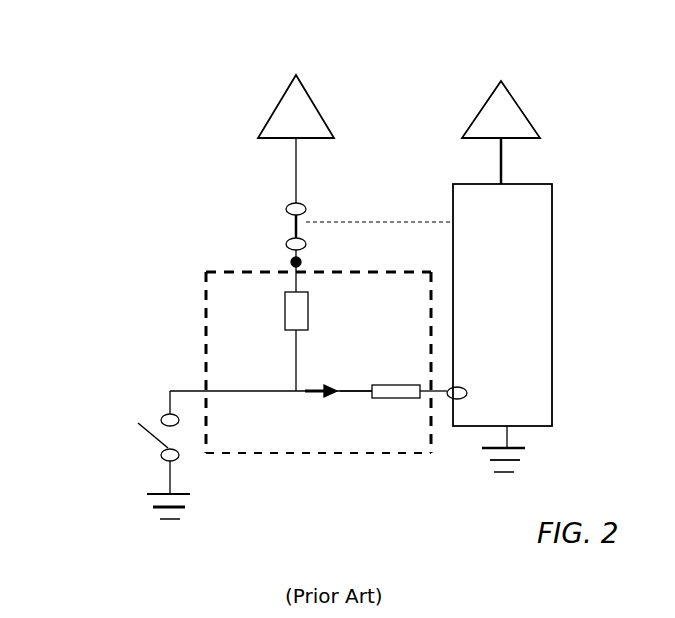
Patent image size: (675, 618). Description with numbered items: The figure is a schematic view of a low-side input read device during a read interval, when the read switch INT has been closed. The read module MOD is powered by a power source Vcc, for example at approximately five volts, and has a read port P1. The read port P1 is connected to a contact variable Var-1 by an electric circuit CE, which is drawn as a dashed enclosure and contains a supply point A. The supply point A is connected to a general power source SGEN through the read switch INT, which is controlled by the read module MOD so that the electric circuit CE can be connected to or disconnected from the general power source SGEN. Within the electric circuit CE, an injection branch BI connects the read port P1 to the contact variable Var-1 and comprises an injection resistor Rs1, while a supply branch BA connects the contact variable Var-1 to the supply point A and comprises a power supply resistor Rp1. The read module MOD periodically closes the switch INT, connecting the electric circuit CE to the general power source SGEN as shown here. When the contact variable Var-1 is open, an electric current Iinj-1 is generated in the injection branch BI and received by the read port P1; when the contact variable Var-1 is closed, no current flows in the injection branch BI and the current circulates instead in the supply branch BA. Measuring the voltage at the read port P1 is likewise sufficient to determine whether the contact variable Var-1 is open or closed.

The general power source SGEN is at (296, 119).
The read switch INT is at (335, 226).
The supply point A is at (306, 271).
The power source Vcc is at (501, 109).
The read module MOD is at (502, 328).
The read port P1 is at (461, 393).
The electric circuit CE is at (305, 454).
The power supply resistor Rp1 is at (265, 341).
The supply branch BA is at (294, 349).
The electric current Iinj-1 is at (317, 410).
The injection branch BI is at (358, 388).
The injection resistor Rs1 is at (396, 410).
The contact variable Var-1 is at (118, 455).